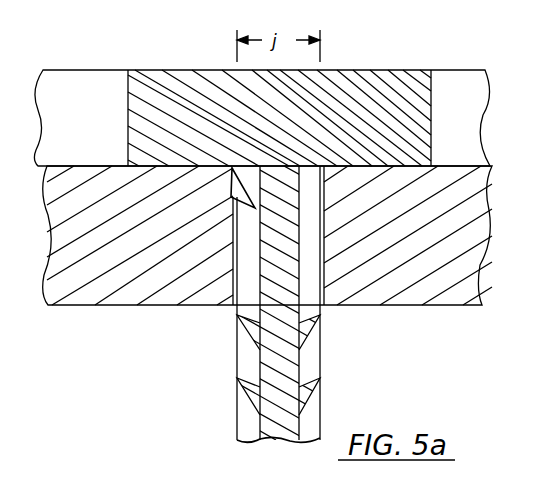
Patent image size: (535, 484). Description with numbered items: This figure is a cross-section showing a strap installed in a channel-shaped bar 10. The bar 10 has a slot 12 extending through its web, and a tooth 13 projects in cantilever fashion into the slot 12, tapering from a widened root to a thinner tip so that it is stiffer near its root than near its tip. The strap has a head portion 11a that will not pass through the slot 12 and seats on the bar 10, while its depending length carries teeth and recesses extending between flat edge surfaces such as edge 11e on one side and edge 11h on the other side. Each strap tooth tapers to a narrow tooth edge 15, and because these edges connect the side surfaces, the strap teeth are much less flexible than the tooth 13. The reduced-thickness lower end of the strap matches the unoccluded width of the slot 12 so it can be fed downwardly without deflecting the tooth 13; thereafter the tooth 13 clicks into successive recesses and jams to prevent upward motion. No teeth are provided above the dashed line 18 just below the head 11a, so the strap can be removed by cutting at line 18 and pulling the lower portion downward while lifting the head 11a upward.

The bar 10 is at (418, 250).
The head portion 11a is at (433, 86).
The flat edge surface 11e is at (237, 408).
The flat edge surface 11h is at (321, 410).
The slot 12 is at (323, 309).
The tooth 13 is at (244, 201).
The tooth edge 15 is at (237, 375).
The line 18 is at (283, 303).